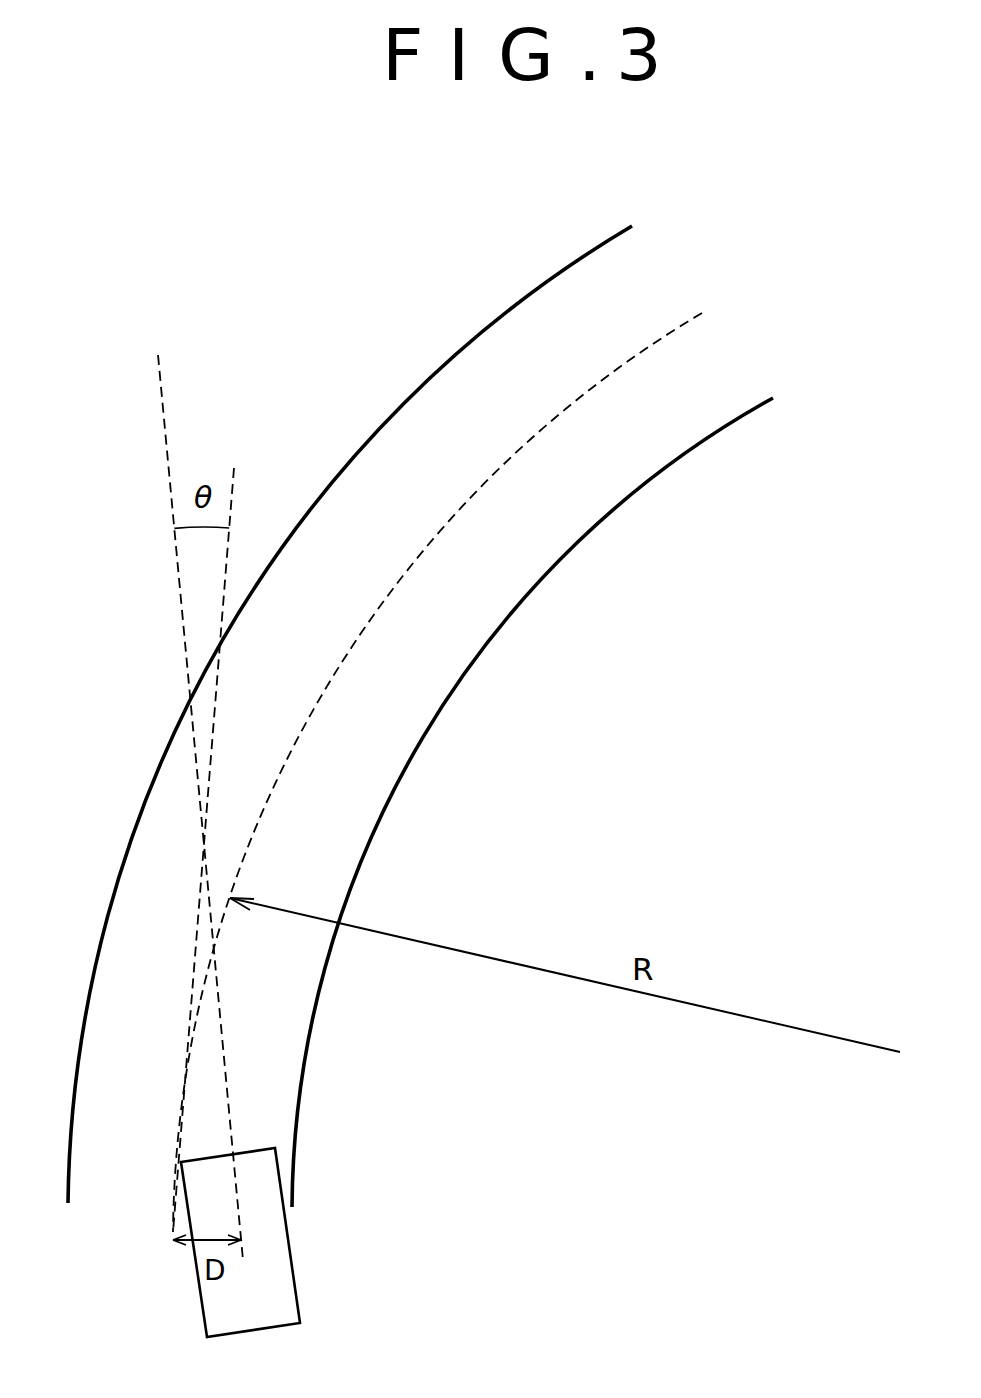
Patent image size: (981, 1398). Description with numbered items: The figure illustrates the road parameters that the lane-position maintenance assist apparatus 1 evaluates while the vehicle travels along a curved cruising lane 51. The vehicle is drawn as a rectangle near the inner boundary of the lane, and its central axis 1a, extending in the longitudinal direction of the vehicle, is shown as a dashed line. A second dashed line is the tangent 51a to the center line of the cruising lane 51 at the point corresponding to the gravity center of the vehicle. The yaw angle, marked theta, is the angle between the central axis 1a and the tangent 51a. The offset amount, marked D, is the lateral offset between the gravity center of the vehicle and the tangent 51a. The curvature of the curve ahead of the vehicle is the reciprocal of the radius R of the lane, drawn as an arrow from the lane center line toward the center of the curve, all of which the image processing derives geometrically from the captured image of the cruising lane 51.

The lane-position maintenance assist apparatus 1 is at (280, 1275).
The central axis 1a is at (164, 424).
The cruising lane 51 is at (495, 582).
The tangent to the center line of the cruising lane 51a is at (234, 483).